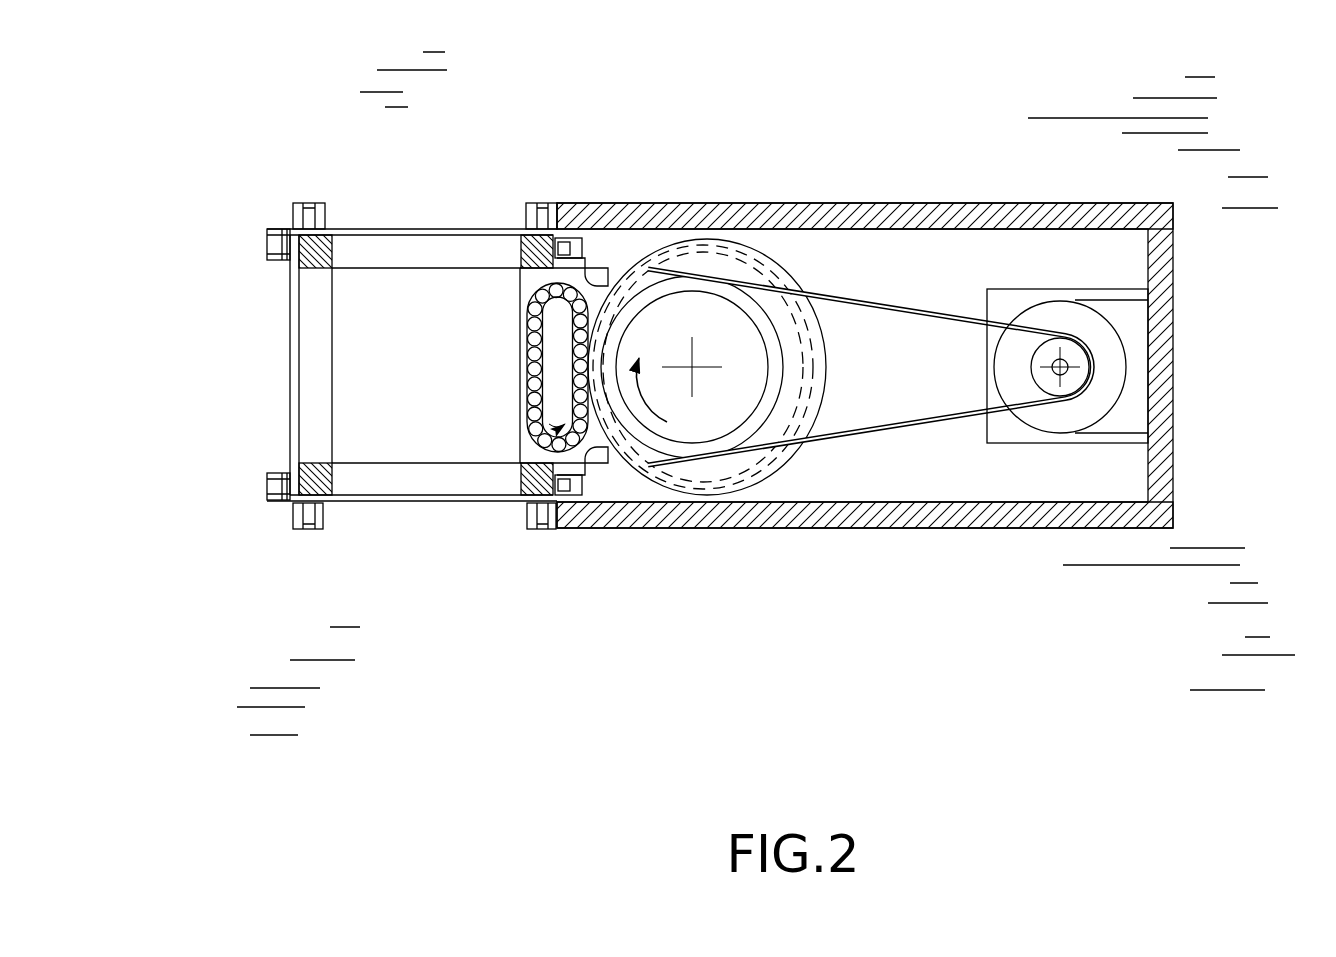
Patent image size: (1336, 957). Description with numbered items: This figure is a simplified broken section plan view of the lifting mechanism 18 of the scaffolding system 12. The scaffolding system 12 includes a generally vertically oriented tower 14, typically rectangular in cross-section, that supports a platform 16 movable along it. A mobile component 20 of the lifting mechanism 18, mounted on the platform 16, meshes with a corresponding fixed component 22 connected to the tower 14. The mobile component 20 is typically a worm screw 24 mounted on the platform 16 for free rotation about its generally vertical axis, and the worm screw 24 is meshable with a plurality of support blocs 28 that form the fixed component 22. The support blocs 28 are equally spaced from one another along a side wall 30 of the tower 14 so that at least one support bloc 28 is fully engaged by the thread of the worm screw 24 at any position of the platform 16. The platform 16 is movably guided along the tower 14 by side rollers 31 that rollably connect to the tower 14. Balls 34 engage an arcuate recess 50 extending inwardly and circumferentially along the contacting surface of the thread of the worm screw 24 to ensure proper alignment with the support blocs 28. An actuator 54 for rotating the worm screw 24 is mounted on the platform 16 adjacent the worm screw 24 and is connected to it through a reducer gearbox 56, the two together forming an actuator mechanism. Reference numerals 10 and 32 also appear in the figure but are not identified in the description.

The drive housing assembly 10 is at (586, 187).
The scaffolding system 12 is at (326, 118).
The tower 14 is at (375, 248).
The platform 16 is at (1004, 652).
The lifting mechanism 18 is at (732, 556).
The mobile component 20 is at (799, 267).
The fixed component 22 is at (597, 258).
The worm screw 24 is at (812, 403).
The support blocs 28 is at (532, 288).
The side wall 30 is at (580, 467).
The side rollers 31 is at (307, 530).
The inner race 32 is at (532, 403).
The balls 34 is at (535, 371).
The arcuate recess 50 is at (812, 365).
The actuator 54 is at (1025, 426).
The reducer gearbox 56 is at (910, 303).